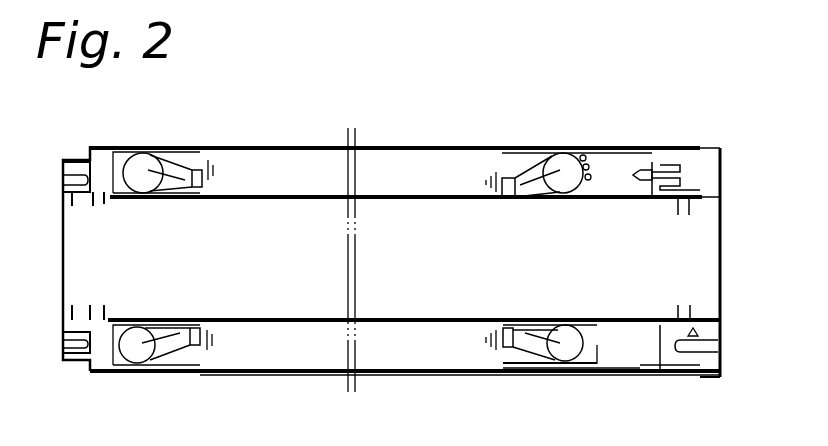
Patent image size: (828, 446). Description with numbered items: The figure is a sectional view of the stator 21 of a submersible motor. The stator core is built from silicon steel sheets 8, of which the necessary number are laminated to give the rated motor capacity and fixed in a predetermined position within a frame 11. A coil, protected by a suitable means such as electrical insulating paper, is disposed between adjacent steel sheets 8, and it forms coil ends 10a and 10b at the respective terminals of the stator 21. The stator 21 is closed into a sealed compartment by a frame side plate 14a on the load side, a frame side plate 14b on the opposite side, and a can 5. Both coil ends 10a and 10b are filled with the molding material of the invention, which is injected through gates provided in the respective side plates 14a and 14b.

The stator 21 is at (391, 231).
The can 5 is at (420, 322).
The silicon steel sheet 8 is at (488, 362).
The frame 11 is at (538, 372).
The coil end 10a is at (598, 362).
The coil end 10b is at (119, 372).
The frame side plate 14a is at (705, 377).
The frame side plate 14b is at (78, 360).